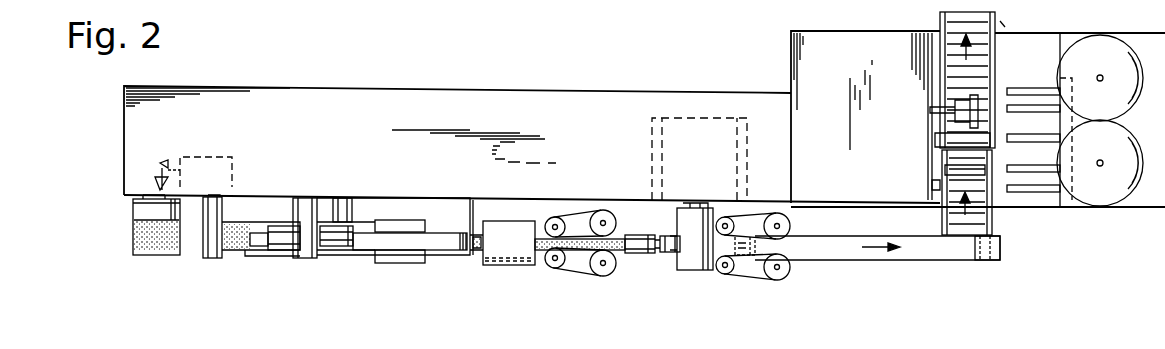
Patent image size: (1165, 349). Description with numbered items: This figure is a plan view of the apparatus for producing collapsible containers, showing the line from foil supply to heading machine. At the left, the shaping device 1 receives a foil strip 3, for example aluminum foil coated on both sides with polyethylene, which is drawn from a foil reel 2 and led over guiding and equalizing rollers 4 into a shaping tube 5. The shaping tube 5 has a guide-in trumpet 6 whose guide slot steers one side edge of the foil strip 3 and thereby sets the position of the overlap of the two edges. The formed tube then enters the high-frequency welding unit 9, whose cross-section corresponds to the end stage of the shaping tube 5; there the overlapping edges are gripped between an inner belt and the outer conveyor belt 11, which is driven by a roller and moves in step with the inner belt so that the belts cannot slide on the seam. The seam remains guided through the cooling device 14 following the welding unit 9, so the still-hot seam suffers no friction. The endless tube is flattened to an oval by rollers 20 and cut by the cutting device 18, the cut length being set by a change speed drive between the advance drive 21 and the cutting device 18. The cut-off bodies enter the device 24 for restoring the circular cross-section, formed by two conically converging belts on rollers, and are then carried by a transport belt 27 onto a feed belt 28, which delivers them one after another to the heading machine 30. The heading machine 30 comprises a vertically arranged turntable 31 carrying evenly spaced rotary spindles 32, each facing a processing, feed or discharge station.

The shaping device 1 is at (413, 80).
The foil reel 2 is at (360, 250).
The foil strip 3 is at (186, 245).
The guiding and equalizing rollers 4 is at (147, 210).
The shaping tube 5 is at (333, 246).
The guide-in trumpet 6 is at (276, 240).
The high-frequency welding unit 9 is at (401, 255).
The conveyor belt 11 is at (450, 243).
The cooling device 14 is at (513, 240).
The cutting device 18 is at (690, 258).
The rollers 20 is at (640, 250).
The advance drive 21 is at (600, 270).
The device for restoring the circular cross-section 24 is at (768, 275).
The transport belt 27 is at (852, 255).
The feed belt 28 is at (955, 213).
The heading machine 30 is at (858, 28).
The turntable 31 is at (1065, 205).
The rotary spindles 32 is at (1025, 110).